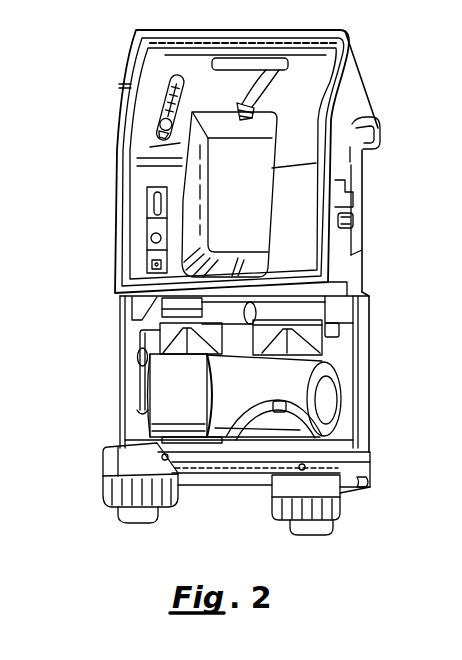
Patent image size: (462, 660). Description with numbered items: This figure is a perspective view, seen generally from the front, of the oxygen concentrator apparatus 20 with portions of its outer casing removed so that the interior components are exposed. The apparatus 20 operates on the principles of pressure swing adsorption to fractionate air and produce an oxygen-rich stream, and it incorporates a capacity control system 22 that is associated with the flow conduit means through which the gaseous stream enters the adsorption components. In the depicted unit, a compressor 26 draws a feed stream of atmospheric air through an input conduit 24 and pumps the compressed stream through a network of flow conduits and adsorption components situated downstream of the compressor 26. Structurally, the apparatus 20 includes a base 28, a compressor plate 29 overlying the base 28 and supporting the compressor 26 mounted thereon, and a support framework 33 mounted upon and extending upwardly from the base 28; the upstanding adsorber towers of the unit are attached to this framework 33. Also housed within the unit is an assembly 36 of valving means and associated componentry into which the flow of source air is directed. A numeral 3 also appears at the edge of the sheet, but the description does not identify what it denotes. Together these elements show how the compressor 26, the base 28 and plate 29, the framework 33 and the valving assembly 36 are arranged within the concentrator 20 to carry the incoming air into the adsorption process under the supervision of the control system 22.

The oxygen concentrator apparatus 20 is at (376, 62).
The latch (partially visible numeral) 3 is at (455, 81).
The capacity control system 22 is at (118, 345).
The input conduit 24 is at (140, 376).
The compressor 26 is at (168, 407).
The base 28 is at (370, 488).
The compressor plate 29 is at (224, 460).
The support framework 33 is at (362, 278).
The assembly of valving means and associated componentry 36 is at (372, 339).